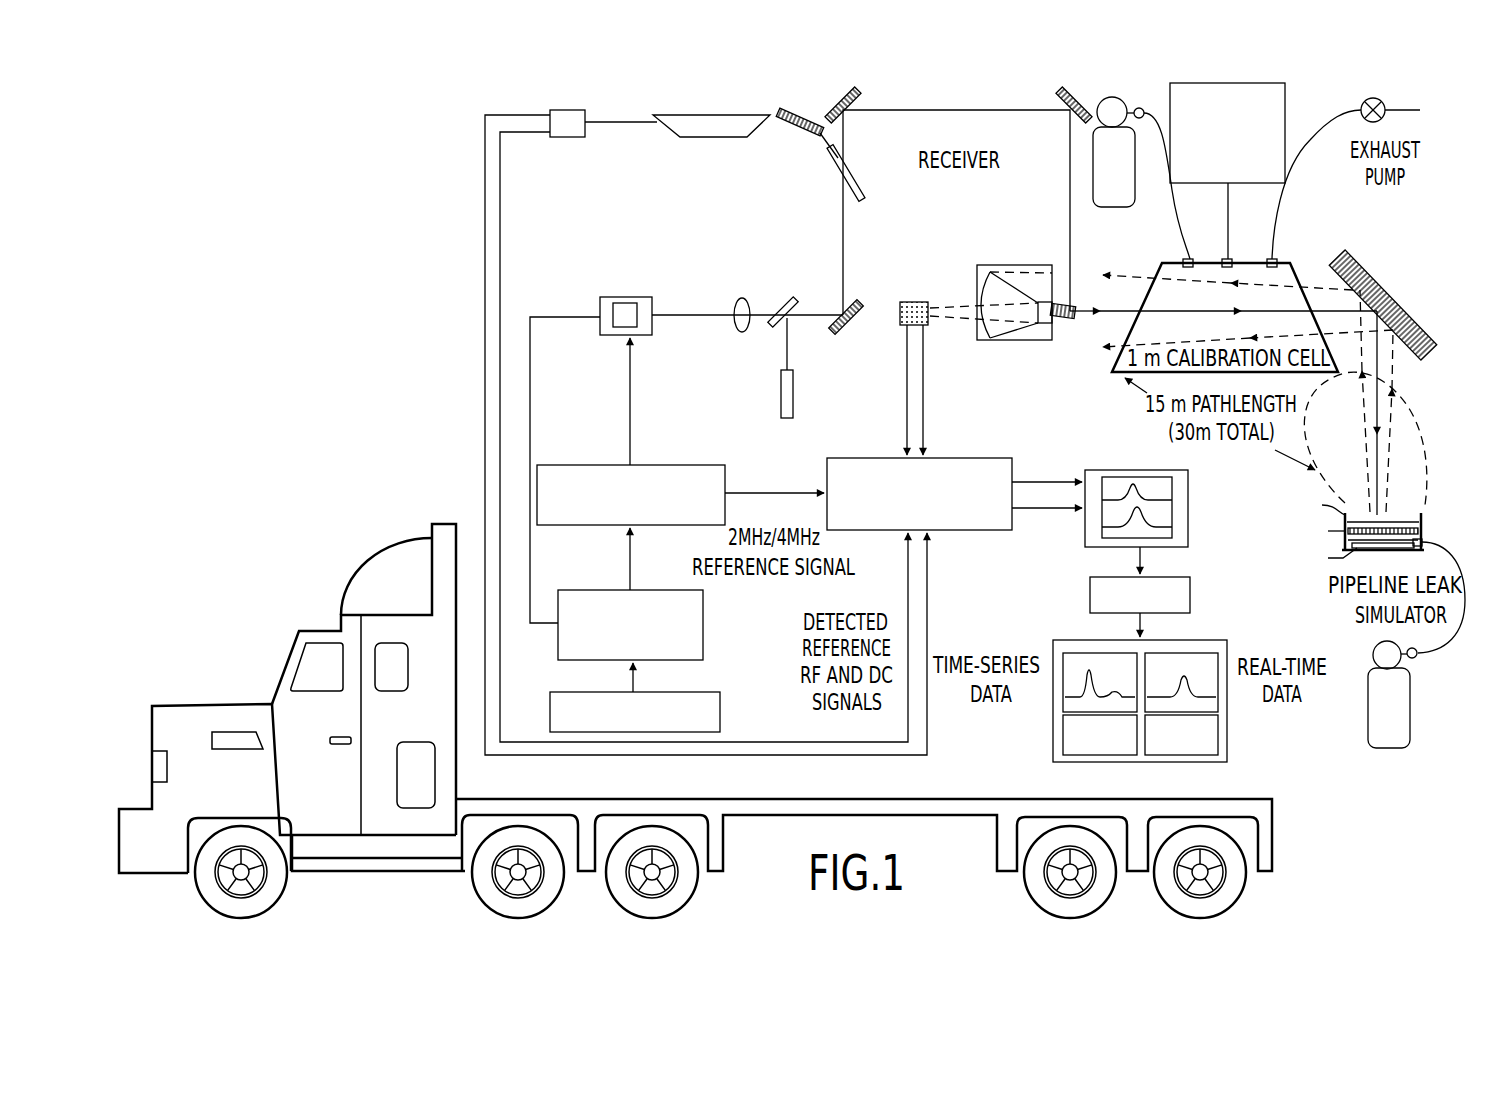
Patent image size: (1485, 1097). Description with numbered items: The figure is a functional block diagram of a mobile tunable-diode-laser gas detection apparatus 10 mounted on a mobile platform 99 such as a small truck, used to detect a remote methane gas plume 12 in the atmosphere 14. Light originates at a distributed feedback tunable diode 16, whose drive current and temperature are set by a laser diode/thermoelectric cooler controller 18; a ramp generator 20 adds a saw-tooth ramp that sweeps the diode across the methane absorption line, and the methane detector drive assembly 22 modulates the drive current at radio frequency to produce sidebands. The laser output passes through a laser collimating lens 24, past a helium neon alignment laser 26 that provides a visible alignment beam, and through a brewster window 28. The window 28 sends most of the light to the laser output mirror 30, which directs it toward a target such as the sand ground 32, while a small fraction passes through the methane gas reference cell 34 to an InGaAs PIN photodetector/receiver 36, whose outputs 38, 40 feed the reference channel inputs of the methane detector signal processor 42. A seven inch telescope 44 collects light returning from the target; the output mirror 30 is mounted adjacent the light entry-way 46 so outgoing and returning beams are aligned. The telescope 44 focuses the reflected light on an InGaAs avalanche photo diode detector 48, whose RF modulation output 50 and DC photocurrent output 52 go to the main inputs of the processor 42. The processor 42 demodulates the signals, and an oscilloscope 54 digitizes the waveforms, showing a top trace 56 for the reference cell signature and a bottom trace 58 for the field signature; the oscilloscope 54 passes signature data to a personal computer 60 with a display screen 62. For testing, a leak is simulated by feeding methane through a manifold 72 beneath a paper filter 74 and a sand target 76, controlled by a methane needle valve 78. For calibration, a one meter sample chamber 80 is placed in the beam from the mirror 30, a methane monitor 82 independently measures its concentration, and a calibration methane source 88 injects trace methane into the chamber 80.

The detection apparatus 10 is at (1340, 86).
The methane gas plume 12 is at (1407, 420).
The atmosphere 14 is at (1437, 438).
The distributed feedback tunable diode 16 is at (600, 303).
The laser diode/thermoelectric cooler controller 18 is at (703, 622).
The ramp generator 20 is at (720, 712).
The methane detector drive assembly 22 is at (668, 465).
The laser collimating lens 24 is at (750, 305).
The helium neon alignment laser 26 is at (787, 418).
The brewster window 28 is at (864, 184).
The laser output mirror 30 is at (1062, 322).
The sand ground target 32 is at (1423, 521).
The methane gas reference cell 34 is at (713, 137).
The InGaAs PIN photodetector/receiver 36 is at (568, 137).
The PIN receiver output 38 is at (485, 259).
The PIN receiver output 40 is at (500, 219).
The methane detector signal processor 42 is at (978, 530).
The telescope 44 is at (1012, 340).
The light entry-way 46 is at (1055, 272).
The InGaAs avalanche photo diode detector 48 is at (900, 312).
The RF modulation output 50 is at (907, 426).
The DC photocurrent output 52 is at (923, 405).
The oscilloscope 54 is at (1190, 510).
The top trace 56 is at (1170, 497).
The bottom trace 58 is at (1170, 527).
The personal computer 60 is at (1190, 595).
The display screen 62 is at (1218, 738).
The manifold 72 is at (1355, 550).
The paper filter 74 is at (1345, 547).
The sand target 76 is at (1408, 518).
The methane needle valve 78 is at (1417, 657).
The sample chamber 80 is at (1304, 266).
The methane monitor 82 is at (1228, 83).
The calibration methane source 88 is at (1134, 206).
The mobile platform 99 is at (1273, 835).